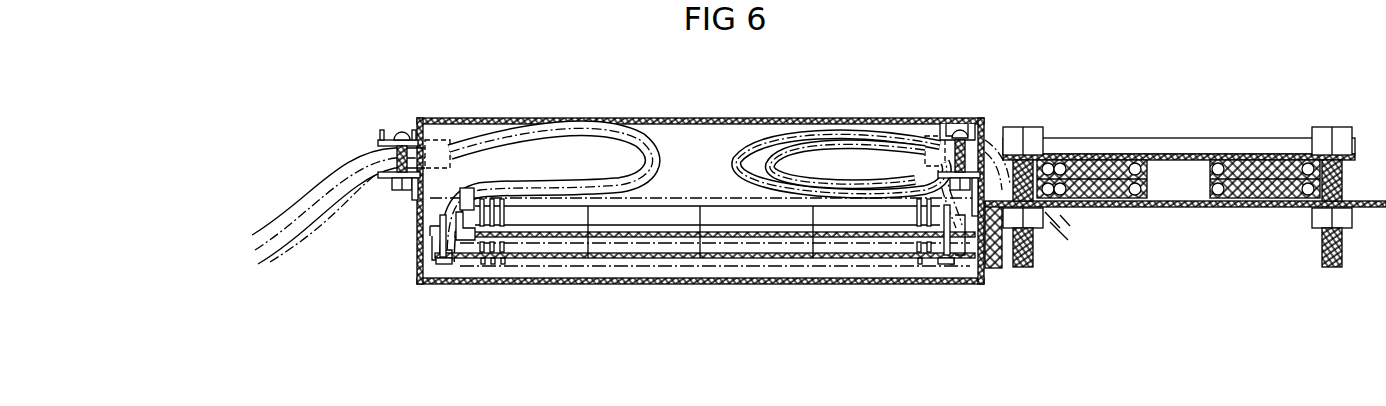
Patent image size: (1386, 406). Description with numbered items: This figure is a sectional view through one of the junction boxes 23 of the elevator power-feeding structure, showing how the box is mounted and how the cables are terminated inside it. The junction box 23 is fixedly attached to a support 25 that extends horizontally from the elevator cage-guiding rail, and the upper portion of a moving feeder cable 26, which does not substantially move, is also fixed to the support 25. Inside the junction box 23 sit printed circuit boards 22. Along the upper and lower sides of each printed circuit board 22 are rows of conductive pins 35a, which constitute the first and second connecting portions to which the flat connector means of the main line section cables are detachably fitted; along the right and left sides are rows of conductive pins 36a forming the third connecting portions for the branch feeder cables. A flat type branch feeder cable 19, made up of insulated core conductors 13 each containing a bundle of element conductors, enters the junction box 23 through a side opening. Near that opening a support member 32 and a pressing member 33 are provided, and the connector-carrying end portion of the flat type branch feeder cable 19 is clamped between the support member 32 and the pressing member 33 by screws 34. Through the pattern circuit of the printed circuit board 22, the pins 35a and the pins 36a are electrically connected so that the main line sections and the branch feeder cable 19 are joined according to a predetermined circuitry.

The insulated core conductor 13 is at (657, 138).
The flat type branch feeder cable 19 is at (330, 228).
The printed circuit board 22 is at (674, 246).
The junction box 23 is at (568, 114).
The support 25 is at (1240, 207).
The moving feeder cable 26 is at (1113, 160).
The support member 32 is at (393, 182).
The pressing member 33 is at (383, 138).
The screw 34 is at (402, 130).
The pin 35a is at (463, 258).
The pin 36a is at (457, 266).